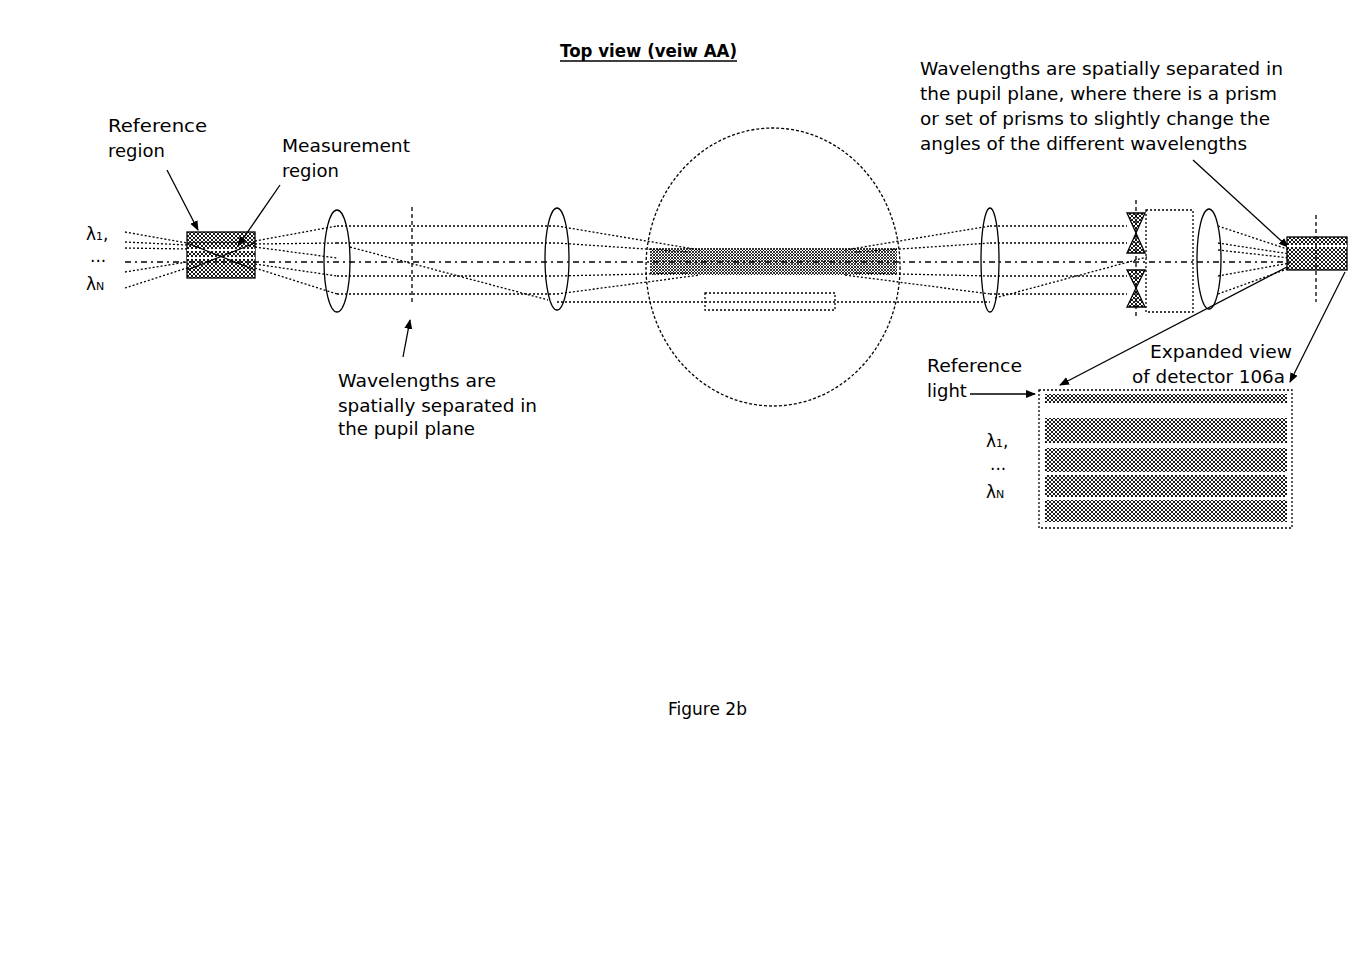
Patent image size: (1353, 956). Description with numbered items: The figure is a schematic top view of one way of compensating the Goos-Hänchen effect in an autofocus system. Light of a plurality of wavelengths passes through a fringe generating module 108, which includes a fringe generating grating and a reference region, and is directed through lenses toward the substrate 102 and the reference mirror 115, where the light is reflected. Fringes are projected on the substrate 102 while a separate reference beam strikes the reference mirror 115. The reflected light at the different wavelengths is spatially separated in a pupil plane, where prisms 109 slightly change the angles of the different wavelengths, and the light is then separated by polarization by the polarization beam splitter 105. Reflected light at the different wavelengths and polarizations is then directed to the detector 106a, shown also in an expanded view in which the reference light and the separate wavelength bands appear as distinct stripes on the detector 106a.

The substrate 102 is at (773, 267).
The polarization beam splitter 105 is at (1148, 313).
The detector 106a is at (1315, 217).
The fringe generating module 108 is at (198, 282).
The prisms 109 is at (1130, 249).
The reference mirror 115 is at (770, 327).